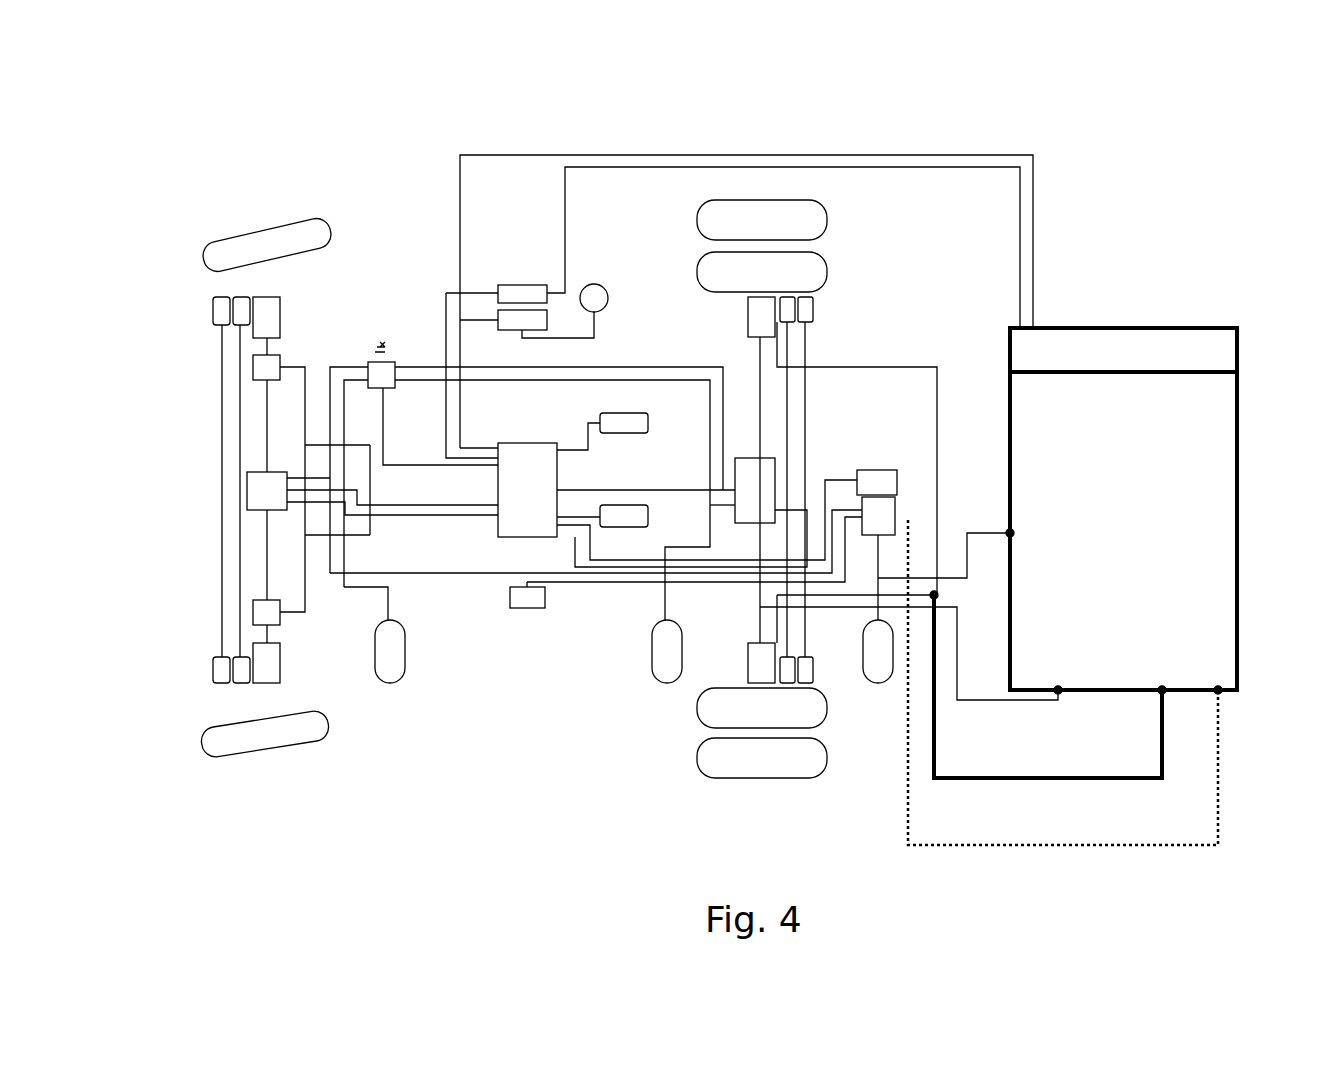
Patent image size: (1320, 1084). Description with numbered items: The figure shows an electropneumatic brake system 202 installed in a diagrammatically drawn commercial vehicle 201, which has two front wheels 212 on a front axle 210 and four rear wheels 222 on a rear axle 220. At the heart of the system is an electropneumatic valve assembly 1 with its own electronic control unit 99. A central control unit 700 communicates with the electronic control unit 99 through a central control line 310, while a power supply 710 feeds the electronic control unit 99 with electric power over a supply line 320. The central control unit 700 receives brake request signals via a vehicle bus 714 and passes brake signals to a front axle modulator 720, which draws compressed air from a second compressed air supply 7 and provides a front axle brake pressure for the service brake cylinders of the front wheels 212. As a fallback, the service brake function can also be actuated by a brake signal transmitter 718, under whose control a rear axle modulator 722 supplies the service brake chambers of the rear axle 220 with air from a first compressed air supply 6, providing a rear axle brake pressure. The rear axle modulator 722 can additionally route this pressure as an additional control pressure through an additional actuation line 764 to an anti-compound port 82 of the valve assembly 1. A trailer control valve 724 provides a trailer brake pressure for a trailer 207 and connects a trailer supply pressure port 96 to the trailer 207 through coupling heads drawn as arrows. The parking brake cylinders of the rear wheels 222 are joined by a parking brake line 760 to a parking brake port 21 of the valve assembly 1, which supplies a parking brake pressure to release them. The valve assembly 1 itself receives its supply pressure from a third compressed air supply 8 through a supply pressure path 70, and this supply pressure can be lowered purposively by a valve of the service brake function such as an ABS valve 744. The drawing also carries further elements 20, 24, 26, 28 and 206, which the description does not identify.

The electropneumatic valve assembly 1 is at (1262, 392).
The first compressed air supply 6 is at (652, 635).
The second compressed air supply 7 is at (390, 683).
The third compressed air supply 8 is at (878, 683).
The supply connection 20 is at (1010, 533).
The parking brake port 21 is at (1163, 695).
The brake actuators 24, 24A, 24B 24 is at (813, 310).
The front axle brake actuator 26 is at (283, 312).
The rear axle brake cylinder 28 is at (748, 315).
The supply pressure path 70 is at (980, 534).
The anti-compound port 82 is at (1060, 695).
The trailer supply pressure port 96 is at (1218, 698).
The electronic control unit 99 is at (1165, 340).
The commercial vehicle 201 is at (1197, 83).
The electropneumatic brake system 202 is at (1100, 154).
The brake control module 206 is at (518, 700).
The trailer 207 is at (908, 517).
The front axle 210 is at (281, 198).
The front wheels 212 is at (210, 248).
The rear axle 220 is at (758, 188).
The rear wheels 222 is at (815, 272).
The central control line 310 is at (695, 157).
The supply line 320 is at (860, 167).
The central control unit 700 is at (536, 443).
The power supply 710 is at (510, 292).
The vehicle bus 714 is at (504, 328).
The brake signal transmitter 718 is at (393, 362).
The front axle modulator 720 is at (247, 490).
The rear axle modulator 722 is at (776, 487).
The trailer control valve 724 is at (900, 497).
The ABS valve 744 is at (253, 368).
The parking brake line 760 is at (1112, 780).
The additional actuation line 764 is at (975, 702).